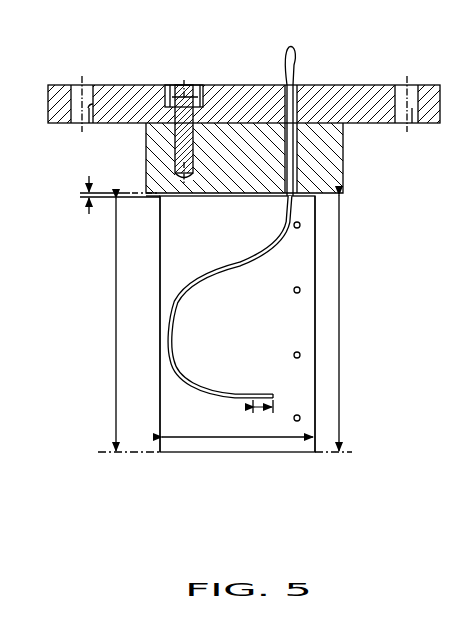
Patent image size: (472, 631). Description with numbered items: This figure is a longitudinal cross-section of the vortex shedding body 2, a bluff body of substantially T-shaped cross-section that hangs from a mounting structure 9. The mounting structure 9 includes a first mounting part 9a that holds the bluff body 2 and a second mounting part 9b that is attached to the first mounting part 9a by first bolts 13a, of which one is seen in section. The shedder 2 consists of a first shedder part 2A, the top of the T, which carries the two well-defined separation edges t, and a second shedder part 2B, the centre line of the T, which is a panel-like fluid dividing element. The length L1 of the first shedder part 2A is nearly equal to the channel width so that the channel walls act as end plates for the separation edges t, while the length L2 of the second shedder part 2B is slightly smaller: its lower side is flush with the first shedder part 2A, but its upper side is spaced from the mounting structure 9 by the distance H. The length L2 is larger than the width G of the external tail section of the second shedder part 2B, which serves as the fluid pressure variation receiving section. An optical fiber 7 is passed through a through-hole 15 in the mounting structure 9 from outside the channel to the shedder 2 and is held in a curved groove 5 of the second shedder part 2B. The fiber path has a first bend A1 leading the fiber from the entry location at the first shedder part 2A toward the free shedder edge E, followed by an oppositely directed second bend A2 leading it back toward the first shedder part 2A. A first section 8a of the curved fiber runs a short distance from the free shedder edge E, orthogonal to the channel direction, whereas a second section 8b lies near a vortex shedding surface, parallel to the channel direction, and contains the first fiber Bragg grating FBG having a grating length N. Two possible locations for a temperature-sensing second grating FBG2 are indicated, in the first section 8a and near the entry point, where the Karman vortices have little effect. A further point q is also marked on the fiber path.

The vortex shedding body 2 is at (312, 475).
The first shedder part 2A is at (289, 454).
The second shedder part 2B is at (183, 454).
The curved groove 5 is at (168, 320).
The fiber 7 is at (284, 62).
The first section of the curved fiber part 8a is at (164, 358).
The second section of the fiber part 8b is at (240, 399).
The mounting structure 9 is at (395, 156).
The first mounting part 9a is at (146, 153).
The second mounting part 9b is at (84, 126).
The first bolt 13a is at (189, 85).
The through-hole 15 is at (303, 84).
The first bend A1 is at (246, 250).
The second bend A2 is at (186, 313).
The free shedder edge E is at (163, 266).
The first fiber Bragg grating FBG is at (262, 393).
The second fiber Bragg grating FBG2 is at (286, 206).
The width of the second shedder part G is at (234, 455).
The distance between second shedder part and mounting structure H is at (78, 193).
The length of the first shedder part L1 is at (340, 315).
The length of the second shedder part L2 is at (115, 289).
The grating length N is at (262, 409).
The fiber bend point q is at (189, 381).
The separation edge t is at (315, 258).